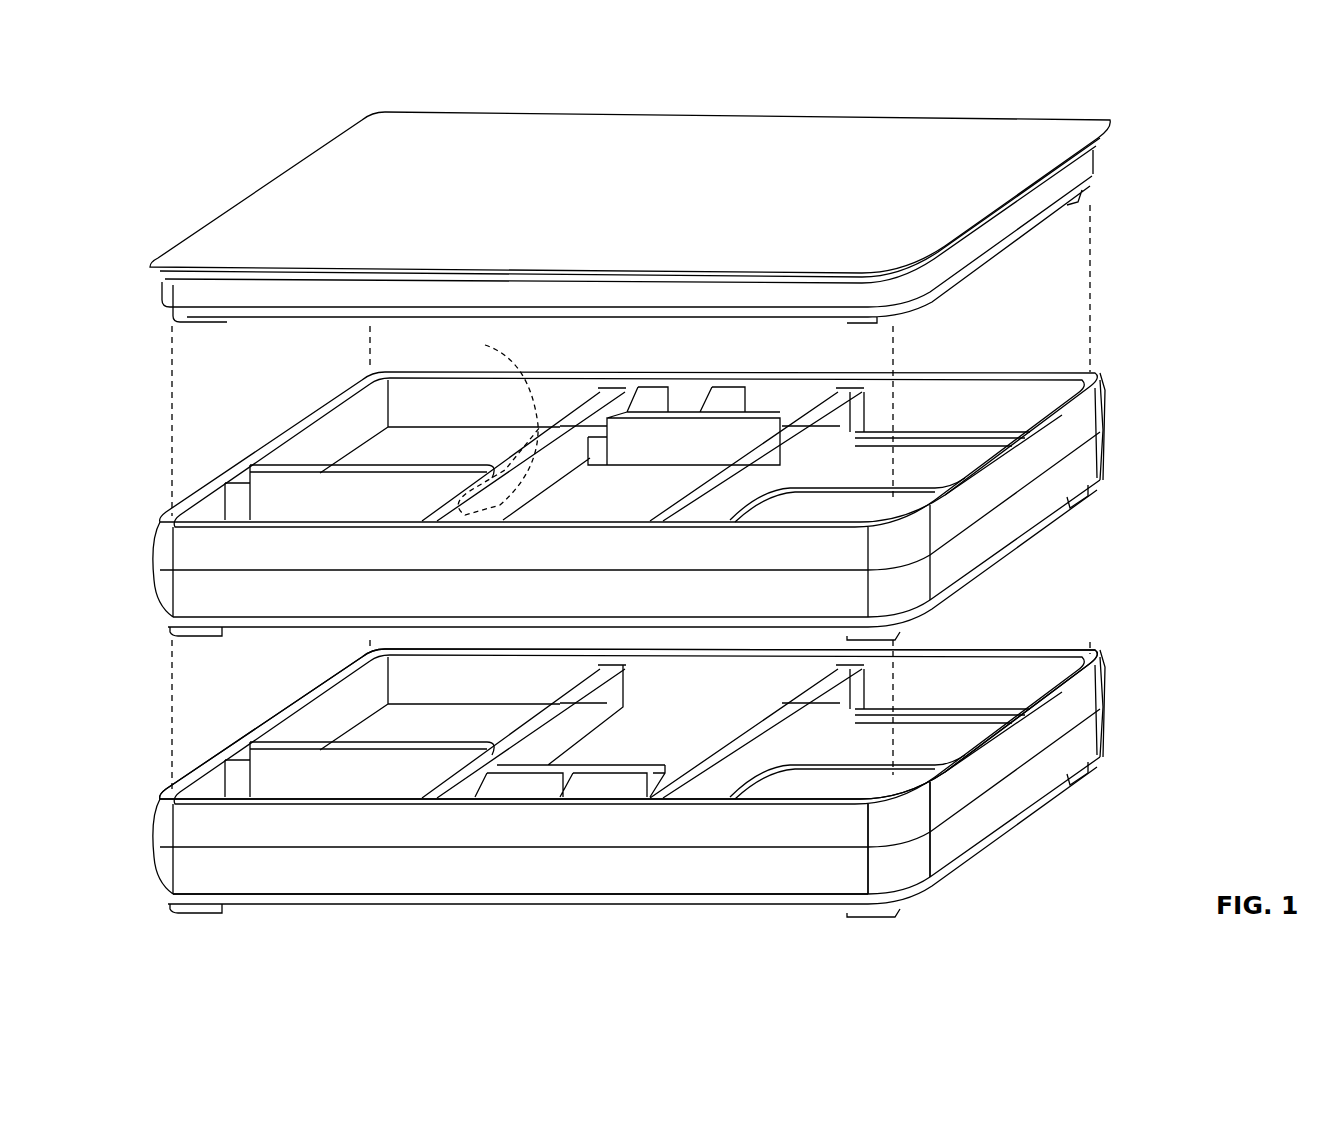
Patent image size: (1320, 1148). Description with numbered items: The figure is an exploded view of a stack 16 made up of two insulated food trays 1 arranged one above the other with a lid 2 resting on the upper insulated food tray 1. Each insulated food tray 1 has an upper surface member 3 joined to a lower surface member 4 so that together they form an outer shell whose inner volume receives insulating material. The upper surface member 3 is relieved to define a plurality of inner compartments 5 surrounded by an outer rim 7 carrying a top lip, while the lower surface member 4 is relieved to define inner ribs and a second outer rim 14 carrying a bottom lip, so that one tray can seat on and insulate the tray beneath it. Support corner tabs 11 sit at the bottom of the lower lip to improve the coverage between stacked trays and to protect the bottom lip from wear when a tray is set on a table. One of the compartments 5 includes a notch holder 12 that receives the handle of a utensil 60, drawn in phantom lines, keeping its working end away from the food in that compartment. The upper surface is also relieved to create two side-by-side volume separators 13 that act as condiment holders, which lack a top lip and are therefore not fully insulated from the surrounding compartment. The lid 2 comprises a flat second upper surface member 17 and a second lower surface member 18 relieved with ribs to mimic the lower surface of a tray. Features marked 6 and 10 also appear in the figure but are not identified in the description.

The insulated food tray 1 is at (282, 389).
The lid 2 is at (292, 131).
The upper surface member 3 is at (1102, 410).
The lower surface member 4 is at (990, 557).
The inner compartments 5 is at (870, 778).
The partition wall 6 is at (268, 466).
The outer rim 7 is at (1096, 652).
The front wall 10 is at (305, 887).
The support corner tabs 11 is at (200, 634).
The notch holder 12 is at (635, 795).
The volume separators 13 is at (493, 788).
The second outer rim 14 is at (690, 906).
The stack 16 is at (858, 91).
The second upper surface member 17 is at (478, 120).
The second lower surface member 18 is at (160, 298).
The utensil 60 is at (492, 425).